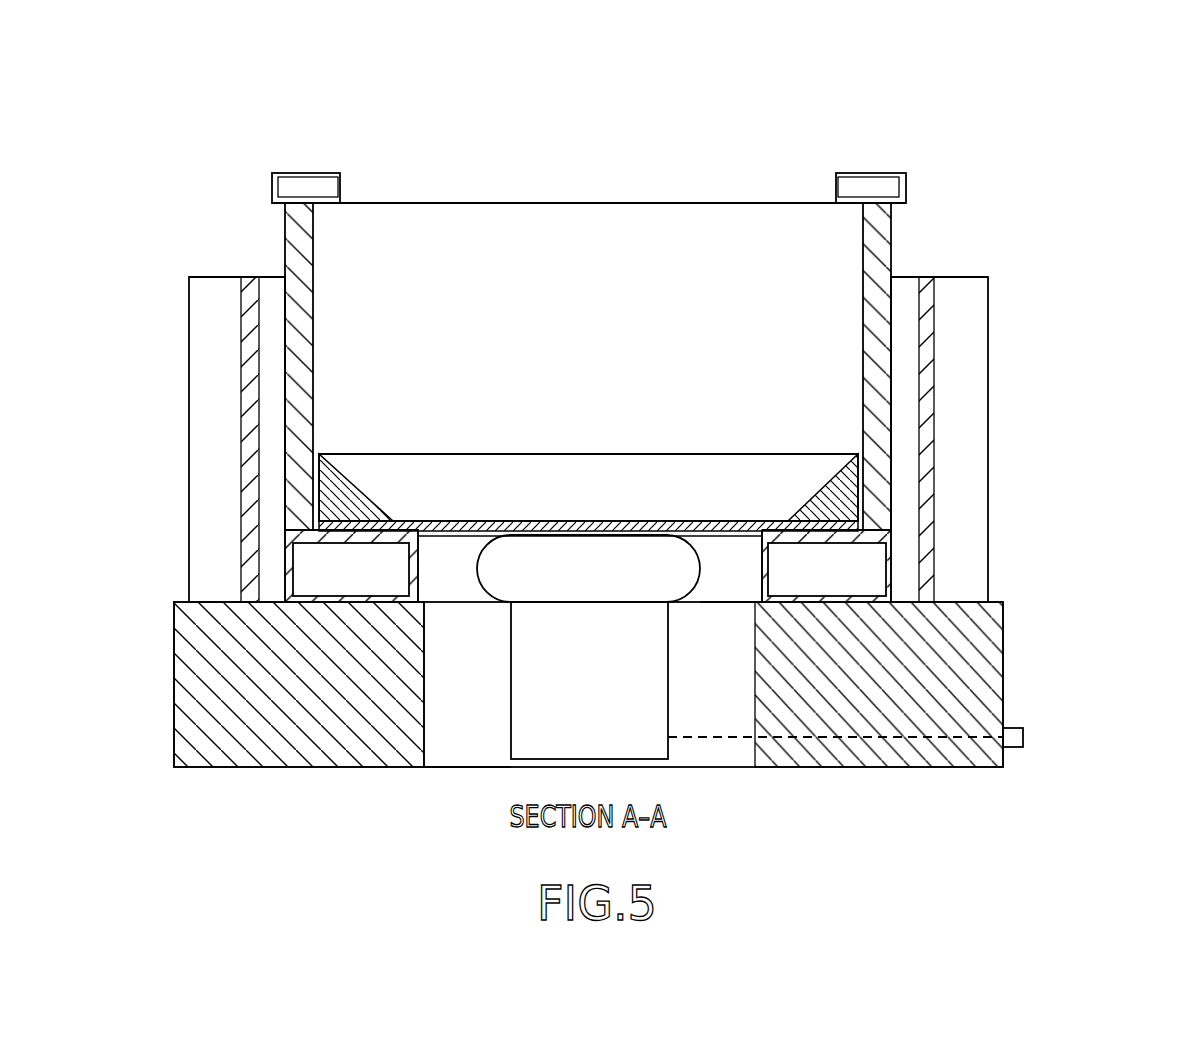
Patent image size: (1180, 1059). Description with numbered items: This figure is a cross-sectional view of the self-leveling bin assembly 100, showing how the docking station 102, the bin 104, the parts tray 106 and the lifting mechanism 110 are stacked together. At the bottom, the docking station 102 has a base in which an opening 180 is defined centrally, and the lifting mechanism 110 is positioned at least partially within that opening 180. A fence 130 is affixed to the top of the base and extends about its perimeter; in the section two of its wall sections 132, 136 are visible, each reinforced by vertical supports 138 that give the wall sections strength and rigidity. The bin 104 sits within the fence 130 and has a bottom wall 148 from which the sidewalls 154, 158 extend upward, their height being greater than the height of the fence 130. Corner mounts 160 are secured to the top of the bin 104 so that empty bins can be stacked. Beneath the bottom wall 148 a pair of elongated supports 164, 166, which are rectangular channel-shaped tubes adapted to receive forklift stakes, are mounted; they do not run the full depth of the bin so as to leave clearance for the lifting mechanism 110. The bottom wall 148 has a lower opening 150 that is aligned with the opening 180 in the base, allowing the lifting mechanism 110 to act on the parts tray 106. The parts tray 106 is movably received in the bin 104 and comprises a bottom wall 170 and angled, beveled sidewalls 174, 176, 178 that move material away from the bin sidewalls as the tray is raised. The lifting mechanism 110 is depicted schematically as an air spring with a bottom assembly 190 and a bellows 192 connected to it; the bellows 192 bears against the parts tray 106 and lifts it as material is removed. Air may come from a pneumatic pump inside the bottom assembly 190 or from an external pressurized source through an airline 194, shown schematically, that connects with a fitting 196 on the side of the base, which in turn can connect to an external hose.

The self-leveling bin assembly 100 is at (858, 114).
The docking station 102 is at (1012, 620).
The bin 104 is at (401, 190).
The parts tray 106 is at (403, 438).
The lifting mechanism 110 is at (637, 588).
The fence 130 is at (244, 382).
The wall section 132 is at (936, 362).
The wall section 136 is at (243, 472).
The vertical supports 138 is at (205, 276).
The bottom wall 148 is at (717, 537).
The lower opening 150 is at (458, 538).
The sidewall 154 is at (861, 266).
The sidewall 158 is at (315, 263).
The corner mounts 160 is at (286, 172).
The elongated support 164 is at (318, 598).
The elongated support 166 is at (812, 598).
The bottom wall 170 is at (518, 530).
The sidewall 174 is at (808, 520).
The sidewall 176 is at (697, 490).
The sidewall 178 is at (343, 473).
The opening 180 is at (424, 733).
The bottom assembly 190 is at (568, 702).
The bellows 192 is at (577, 556).
The airline 194 is at (890, 737).
The fitting 196 is at (1024, 737).